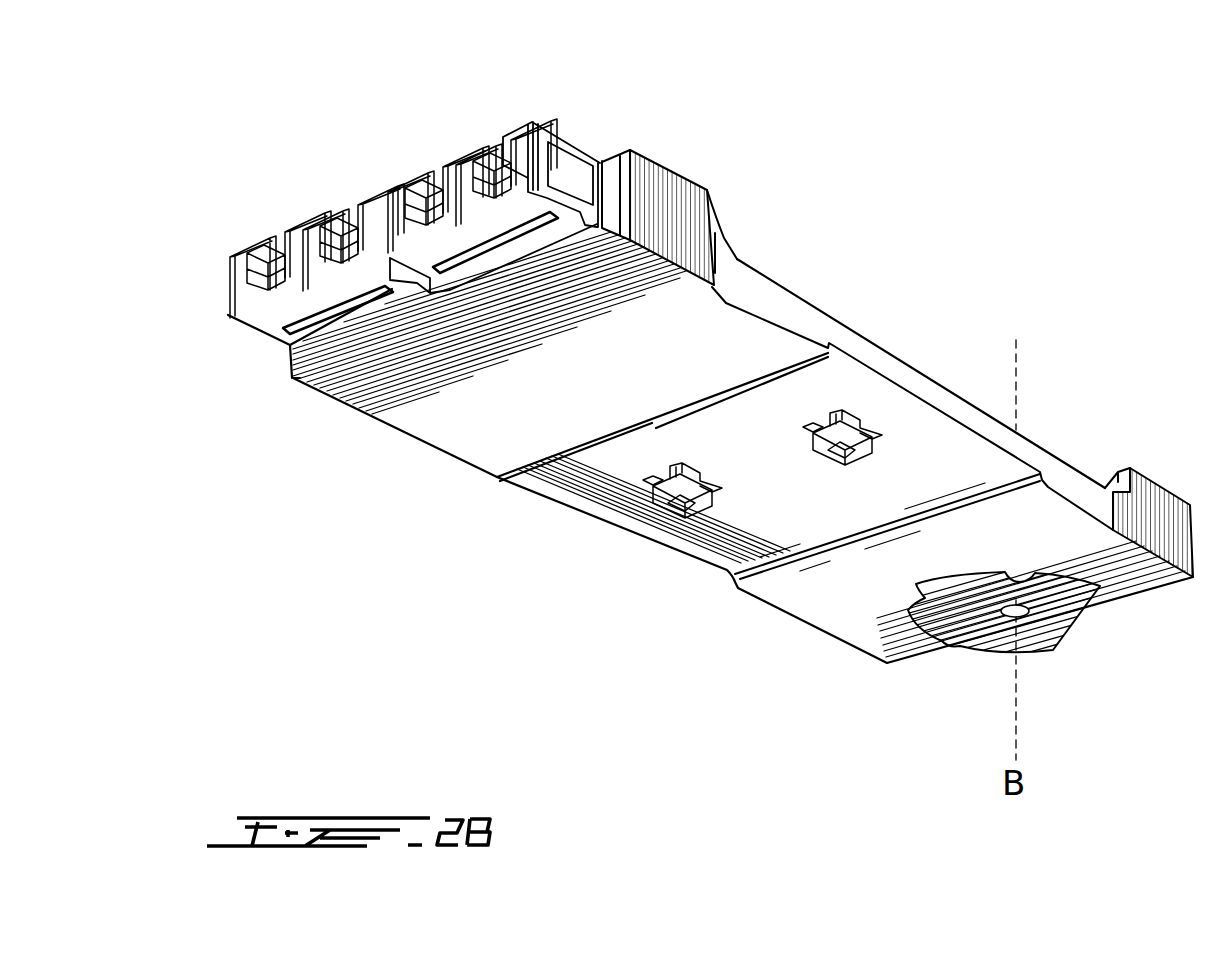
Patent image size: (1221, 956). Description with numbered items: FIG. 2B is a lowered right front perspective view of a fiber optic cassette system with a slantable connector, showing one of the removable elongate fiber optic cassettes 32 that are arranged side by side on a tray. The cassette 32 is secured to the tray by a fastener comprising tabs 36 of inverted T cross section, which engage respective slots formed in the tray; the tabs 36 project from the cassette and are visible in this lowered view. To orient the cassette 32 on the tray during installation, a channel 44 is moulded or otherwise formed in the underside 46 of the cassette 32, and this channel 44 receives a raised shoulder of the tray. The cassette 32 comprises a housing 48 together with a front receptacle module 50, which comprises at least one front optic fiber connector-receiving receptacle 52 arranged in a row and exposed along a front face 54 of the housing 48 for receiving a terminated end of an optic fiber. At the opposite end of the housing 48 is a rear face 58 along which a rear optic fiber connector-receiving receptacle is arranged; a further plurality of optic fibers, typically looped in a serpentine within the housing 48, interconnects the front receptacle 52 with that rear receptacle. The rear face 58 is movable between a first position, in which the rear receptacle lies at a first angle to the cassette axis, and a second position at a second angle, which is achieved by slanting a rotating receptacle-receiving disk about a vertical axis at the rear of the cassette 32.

The fiber optic cassette 32 is at (710, 447).
The tabs 36 is at (830, 455).
The channel 44 is at (920, 440).
The underside 46 is at (697, 346).
The housing 48 is at (699, 187).
The front receptacle module 50 is at (420, 254).
The front optic fiber connector-receiving receptacle 52 is at (488, 162).
The front face 54 is at (626, 160).
The rear face 58 is at (953, 640).